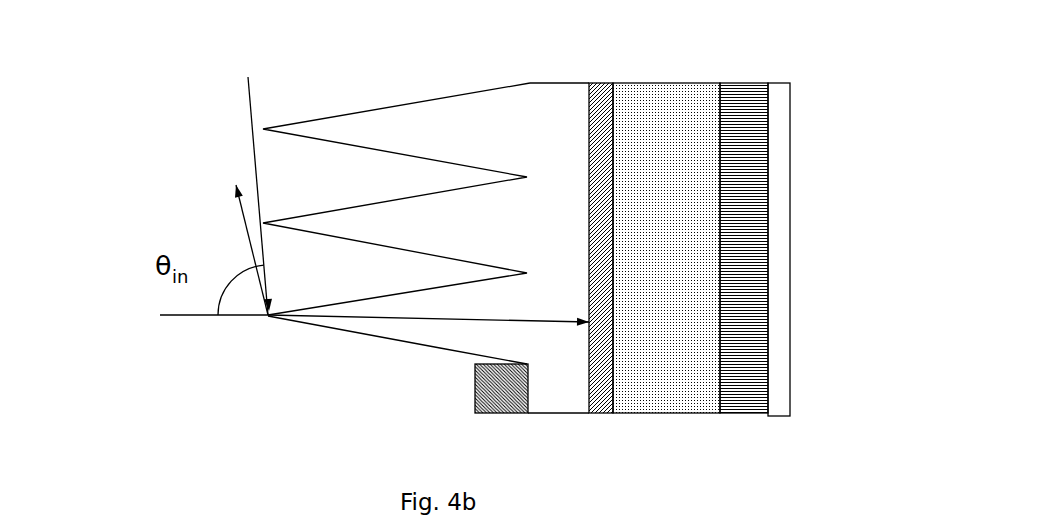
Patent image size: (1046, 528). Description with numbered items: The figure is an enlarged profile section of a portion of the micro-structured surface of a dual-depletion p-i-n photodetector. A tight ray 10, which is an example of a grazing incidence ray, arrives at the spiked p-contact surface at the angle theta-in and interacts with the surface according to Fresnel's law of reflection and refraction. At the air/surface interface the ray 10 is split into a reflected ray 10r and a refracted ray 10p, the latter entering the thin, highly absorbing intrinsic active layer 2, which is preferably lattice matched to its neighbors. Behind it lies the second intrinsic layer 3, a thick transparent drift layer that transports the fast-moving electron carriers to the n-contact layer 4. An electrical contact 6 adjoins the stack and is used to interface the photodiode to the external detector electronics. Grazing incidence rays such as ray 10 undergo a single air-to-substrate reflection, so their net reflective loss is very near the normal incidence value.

The intrinsic layer 2 is at (601, 84).
The second intrinsic layer 3 is at (648, 95).
The n-contact layer 4 is at (732, 93).
The electrical contact 6 is at (780, 95).
The ray 10 is at (247, 140).
The reflected ray 10r is at (237, 213).
The refracted ray 10p is at (447, 318).